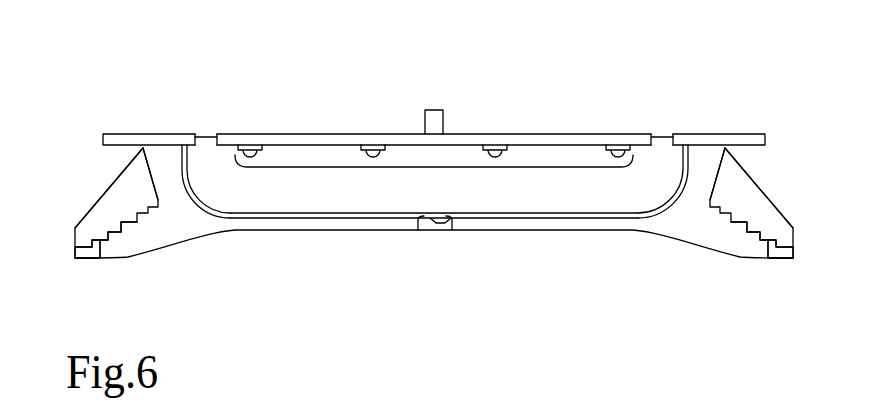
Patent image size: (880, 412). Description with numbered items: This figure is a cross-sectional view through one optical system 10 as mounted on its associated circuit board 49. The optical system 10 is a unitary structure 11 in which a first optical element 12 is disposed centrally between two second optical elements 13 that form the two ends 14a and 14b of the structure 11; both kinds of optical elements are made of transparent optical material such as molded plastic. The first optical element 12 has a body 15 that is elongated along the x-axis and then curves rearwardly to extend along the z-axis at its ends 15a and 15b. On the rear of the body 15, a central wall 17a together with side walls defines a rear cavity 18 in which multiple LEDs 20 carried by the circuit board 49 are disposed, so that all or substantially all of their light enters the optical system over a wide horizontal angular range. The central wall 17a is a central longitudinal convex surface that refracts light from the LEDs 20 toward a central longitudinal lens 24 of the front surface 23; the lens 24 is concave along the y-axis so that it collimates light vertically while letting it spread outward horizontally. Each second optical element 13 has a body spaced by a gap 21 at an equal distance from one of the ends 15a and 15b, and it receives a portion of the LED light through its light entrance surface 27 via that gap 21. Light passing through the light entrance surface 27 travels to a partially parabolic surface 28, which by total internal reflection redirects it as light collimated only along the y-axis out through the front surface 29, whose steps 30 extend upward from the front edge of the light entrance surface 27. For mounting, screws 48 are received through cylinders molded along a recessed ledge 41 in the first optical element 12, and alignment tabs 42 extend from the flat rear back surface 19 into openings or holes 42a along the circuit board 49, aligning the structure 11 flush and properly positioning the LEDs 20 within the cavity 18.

The optical system 10 is at (596, 230).
The unitary structure 11 is at (278, 230).
The first optical element 12 is at (322, 192).
The second optical element 13 is at (107, 215).
The end of structure 14a is at (792, 228).
The end of structure 14b is at (107, 215).
The body 15 is at (408, 185).
The end of body 15a is at (192, 188).
The end of body 15b is at (678, 187).
The central wall 17a is at (520, 167).
The rear cavity 18 is at (456, 160).
The flat rear back surface 19 is at (220, 143).
The LED 20 is at (370, 145).
The gap 21 is at (165, 165).
The front surface 23 is at (204, 207).
The central longitudinal lens 24 is at (283, 212).
The light entrance surface 27 is at (146, 172).
The partially parabolic surface 28 is at (107, 192).
The front surface 29 is at (93, 248).
The steps 30 is at (127, 223).
The recessed ledge 41 is at (428, 222).
The alignment tab 42 is at (195, 141).
The opening or hole 42a is at (202, 135).
The screw 48 is at (440, 222).
The circuit board 49 is at (718, 134).